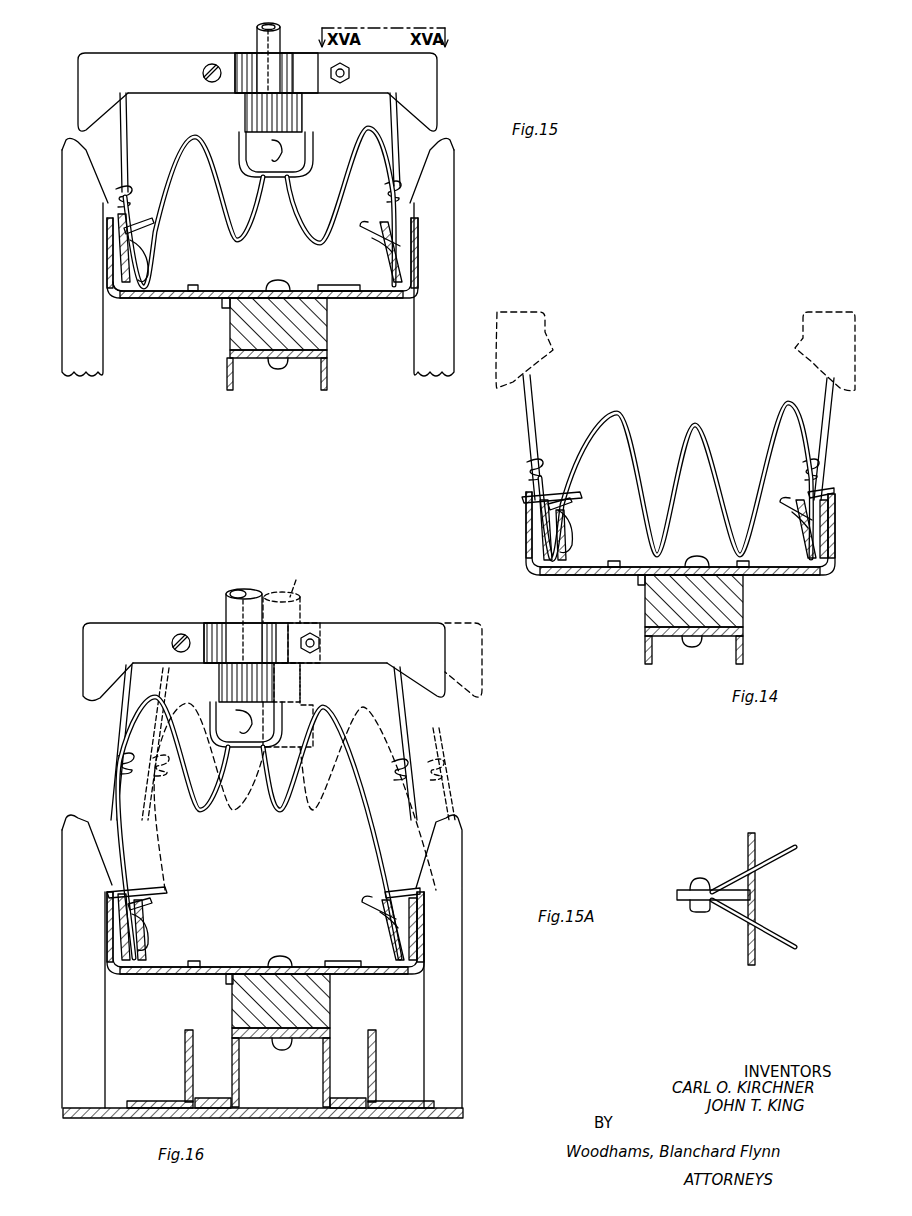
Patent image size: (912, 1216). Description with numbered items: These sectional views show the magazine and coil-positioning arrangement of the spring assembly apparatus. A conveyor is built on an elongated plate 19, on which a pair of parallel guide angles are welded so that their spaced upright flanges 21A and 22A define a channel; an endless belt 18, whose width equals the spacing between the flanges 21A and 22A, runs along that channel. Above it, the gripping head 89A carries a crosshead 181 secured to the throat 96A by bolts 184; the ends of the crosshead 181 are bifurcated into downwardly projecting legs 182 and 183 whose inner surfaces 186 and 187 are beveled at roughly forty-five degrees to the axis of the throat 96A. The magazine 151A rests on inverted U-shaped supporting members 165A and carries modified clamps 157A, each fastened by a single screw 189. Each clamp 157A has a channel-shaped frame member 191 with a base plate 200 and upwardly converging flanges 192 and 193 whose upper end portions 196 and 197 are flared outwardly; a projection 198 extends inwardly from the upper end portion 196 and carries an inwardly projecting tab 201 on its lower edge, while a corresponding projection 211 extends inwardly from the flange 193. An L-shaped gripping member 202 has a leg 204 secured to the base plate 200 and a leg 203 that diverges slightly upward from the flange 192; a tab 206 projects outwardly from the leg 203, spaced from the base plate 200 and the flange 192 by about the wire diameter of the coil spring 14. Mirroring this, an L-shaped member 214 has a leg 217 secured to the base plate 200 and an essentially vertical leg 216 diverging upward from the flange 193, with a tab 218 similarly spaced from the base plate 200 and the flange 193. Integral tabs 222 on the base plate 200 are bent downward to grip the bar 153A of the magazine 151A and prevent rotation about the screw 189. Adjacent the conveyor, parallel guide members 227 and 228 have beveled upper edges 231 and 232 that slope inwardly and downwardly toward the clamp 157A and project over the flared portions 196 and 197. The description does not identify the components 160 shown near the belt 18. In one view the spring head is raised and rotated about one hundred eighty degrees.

In FIG. 15, the coil spring 14 is at (305, 210).
In FIG. 14, the coil spring 14 is at (692, 420).
In FIG. 15A, the coil spring 14 is at (750, 948).
In FIG. 16, the coil spring 14 is at (288, 815).
In FIG. 16, the endless belt 18 is at (262, 1100).
In FIG. 16, the elongated plate 19 is at (390, 1118).
In FIG. 16, the upright flange 21A is at (184, 1072).
In FIG. 16, the upright flange 22A is at (378, 1072).
In FIG. 15, the gripping head 89A is at (240, 112).
In FIG. 16, the gripping head 89A is at (298, 582).
In FIG. 15, the throat 96A is at (303, 100).
In FIG. 16, the throat 96A is at (224, 672).
In FIG. 15, the magazine 151A is at (226, 342).
In FIG. 14, the magazine 151A is at (642, 634).
In FIG. 16, the magazine 151A is at (226, 1024).
In FIG. 15, the bar 153A is at (228, 375).
In FIG. 14, the bar 153A is at (650, 620).
In FIG. 16, the bar 153A is at (232, 1014).
In FIG. 15, the modified clamp 157A is at (358, 305).
In FIG. 14, the modified clamp 157A is at (570, 576).
In FIG. 16, the modified clamp 157A is at (364, 982).
In FIG. 16, the spacer blocks 160 is at (222, 1080).
In FIG. 15, the inverted U-shaped supporting member 165A is at (328, 380).
In FIG. 14, the inverted U-shaped supporting member 165A is at (744, 650).
In FIG. 16, the inverted U-shaped supporting member 165A is at (328, 1032).
In FIG. 15, the crosshead 181 is at (198, 56).
In FIG. 14, the crosshead 181 is at (536, 358).
In FIG. 15A, the crosshead 181 is at (682, 902).
In FIG. 16, the crosshead 181 is at (196, 623).
In FIG. 15, the downwardly projecting leg 182 is at (95, 80).
In FIG. 16, the downwardly projecting leg 182 is at (420, 680).
In FIG. 15, the downwardly projecting leg 183 is at (438, 110).
In FIG. 16, the downwardly projecting leg 183 is at (92, 648).
In FIG. 15, the bolt 184 is at (202, 73).
In FIG. 15A, the bolt 184 is at (700, 914).
In FIG. 16, the bolt 184 is at (171, 643).
In FIG. 15, the inner surface 186 is at (118, 118).
In FIG. 14, the inner surface 186 is at (508, 388).
In FIG. 16, the inner surface 186 is at (428, 702).
In FIG. 15, the inner surface 187 is at (408, 122).
In FIG. 14, the inner surface 187 is at (814, 366).
In FIG. 16, the inner surface 187 is at (104, 694).
In FIG. 15, the screw 189 is at (284, 283).
In FIG. 14, the screw 189 is at (702, 556).
In FIG. 16, the screw 189 is at (290, 951).
In FIG. 15, the channel-shaped frame member 191 is at (182, 296).
In FIG. 14, the channel-shaped frame member 191 is at (524, 550).
In FIG. 16, the channel-shaped frame member 191 is at (164, 974).
In FIG. 14, the flange 192 is at (530, 526).
In FIG. 16, the flange 192 is at (116, 936).
In FIG. 14, the flange 193 is at (826, 540).
In FIG. 16, the flange 193 is at (418, 950).
In FIG. 14, the upper end portion 196 is at (524, 497).
In FIG. 16, the upper end portion 196 is at (116, 898).
In FIG. 14, the upper end portion 197 is at (830, 496).
In FIG. 16, the upper end portion 197 is at (414, 894).
In FIG. 15, the projection 198 is at (139, 189).
In FIG. 15, the base plate 200 is at (250, 292).
In FIG. 16, the base plate 200 is at (246, 966).
In FIG. 15, the tab 201 is at (148, 226).
In FIG. 14, the tab 201 is at (570, 500).
In FIG. 15, the L-shaped gripping member 202 is at (150, 268).
In FIG. 14, the L-shaped gripping member 202 is at (570, 548).
In FIG. 16, the L-shaped gripping member 202 is at (142, 946).
In FIG. 15, the leg 203 is at (156, 250).
In FIG. 14, the leg 203 is at (574, 530).
In FIG. 16, the leg 203 is at (148, 926).
In FIG. 15, the leg 204 is at (188, 290).
In FIG. 14, the leg 204 is at (612, 562).
In FIG. 16, the leg 204 is at (190, 966).
In FIG. 15, the tab 206 is at (122, 292).
In FIG. 14, the tab 206 is at (530, 562).
In FIG. 16, the tab 206 is at (116, 974).
In FIG. 15, the projection 211 is at (358, 224).
In FIG. 14, the projection 211 is at (778, 500).
In FIG. 16, the projection 211 is at (378, 900).
In FIG. 15, the L-shaped member 214 is at (375, 268).
In FIG. 14, the L-shaped member 214 is at (792, 560).
In FIG. 16, the L-shaped member 214 is at (378, 956).
In FIG. 15, the leg 216 is at (374, 240).
In FIG. 14, the leg 216 is at (800, 520).
In FIG. 16, the leg 216 is at (380, 918).
In FIG. 15, the leg 217 is at (340, 290).
In FIG. 14, the leg 217 is at (758, 562).
In FIG. 16, the leg 217 is at (350, 964).
In FIG. 15, the tab 218 is at (396, 295).
In FIG. 14, the tab 218 is at (808, 572).
In FIG. 16, the tab 218 is at (372, 976).
In FIG. 15, the tab 222 is at (222, 308).
In FIG. 14, the tab 222 is at (636, 583).
In FIG. 16, the tab 222 is at (224, 984).
In FIG. 15, the guide member 227 is at (82, 263).
In FIG. 16, the guide member 227 is at (83, 969).
In FIG. 15, the guide member 228 is at (434, 263).
In FIG. 16, the guide member 228 is at (439, 961).
In FIG. 15, the beveled edge 231 is at (84, 142).
In FIG. 16, the beveled edge 231 is at (92, 818).
In FIG. 15, the beveled edge 232 is at (452, 138).
In FIG. 16, the beveled edge 232 is at (432, 838).